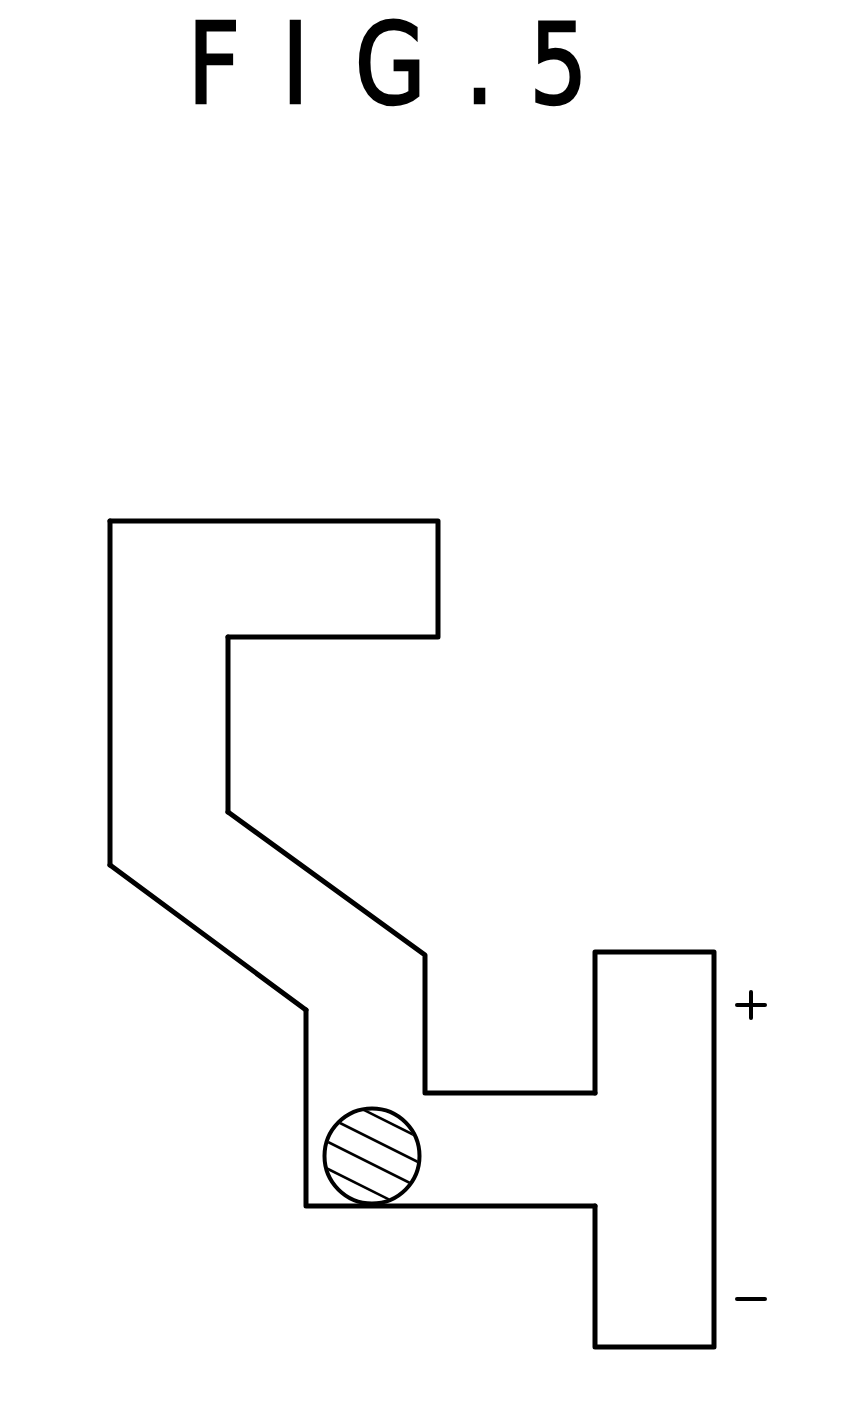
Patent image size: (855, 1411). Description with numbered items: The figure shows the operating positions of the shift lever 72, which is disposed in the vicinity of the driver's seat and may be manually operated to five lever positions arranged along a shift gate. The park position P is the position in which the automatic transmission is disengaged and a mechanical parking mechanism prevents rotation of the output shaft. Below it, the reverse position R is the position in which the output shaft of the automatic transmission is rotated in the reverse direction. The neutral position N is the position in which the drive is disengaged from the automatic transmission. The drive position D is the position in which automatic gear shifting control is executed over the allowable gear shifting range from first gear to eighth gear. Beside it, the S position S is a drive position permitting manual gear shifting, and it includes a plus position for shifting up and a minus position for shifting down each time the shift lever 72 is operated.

The shift lever 72 is at (363, 1155).
The park position P is at (274, 538).
The reverse position R is at (131, 693).
The neutral position N is at (352, 952).
The drive position D is at (409, 1109).
The S position S is at (683, 1149).